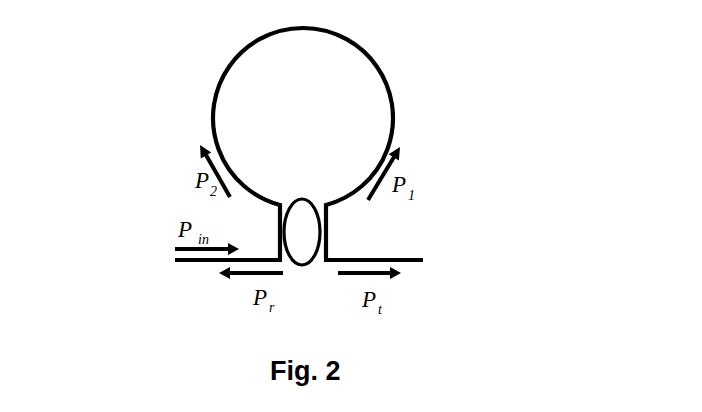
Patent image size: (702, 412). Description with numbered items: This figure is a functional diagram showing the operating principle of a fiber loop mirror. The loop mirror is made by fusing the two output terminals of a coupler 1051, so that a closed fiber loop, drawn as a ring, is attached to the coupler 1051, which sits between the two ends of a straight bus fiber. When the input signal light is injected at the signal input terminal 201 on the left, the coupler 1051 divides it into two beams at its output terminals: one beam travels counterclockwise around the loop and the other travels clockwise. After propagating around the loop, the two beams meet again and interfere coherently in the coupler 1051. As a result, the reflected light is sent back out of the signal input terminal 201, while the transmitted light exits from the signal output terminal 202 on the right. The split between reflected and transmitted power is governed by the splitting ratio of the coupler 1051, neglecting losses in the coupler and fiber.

The signal input terminal 201 is at (193, 263).
The signal output terminal 202 is at (410, 263).
The coupler 1051 is at (298, 199).